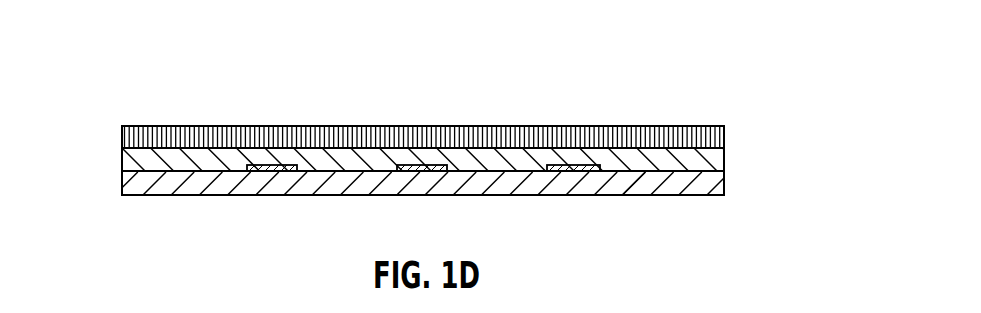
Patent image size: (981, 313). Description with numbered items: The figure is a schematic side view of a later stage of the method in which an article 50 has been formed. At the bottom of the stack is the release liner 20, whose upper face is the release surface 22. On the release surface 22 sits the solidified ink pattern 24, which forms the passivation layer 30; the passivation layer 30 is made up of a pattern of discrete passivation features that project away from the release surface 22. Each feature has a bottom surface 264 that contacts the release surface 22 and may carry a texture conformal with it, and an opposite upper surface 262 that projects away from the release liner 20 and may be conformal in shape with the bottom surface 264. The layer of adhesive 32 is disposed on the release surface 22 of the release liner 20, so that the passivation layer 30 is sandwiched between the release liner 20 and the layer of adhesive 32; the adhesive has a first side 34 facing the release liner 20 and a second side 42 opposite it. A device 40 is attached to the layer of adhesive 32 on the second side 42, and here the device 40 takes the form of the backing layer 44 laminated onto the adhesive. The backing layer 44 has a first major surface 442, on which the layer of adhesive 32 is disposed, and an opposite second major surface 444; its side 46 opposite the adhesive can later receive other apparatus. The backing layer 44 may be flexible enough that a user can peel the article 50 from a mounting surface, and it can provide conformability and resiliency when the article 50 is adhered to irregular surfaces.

The release liner 20 is at (465, 143).
The release surface 22 is at (650, 176).
The solidified ink pattern 24 is at (406, 143).
The passivation layer 30 is at (419, 140).
The layer of adhesive 32 is at (373, 157).
The first side 34 is at (362, 170).
The device 40 is at (448, 119).
The second side 42 is at (409, 140).
The backing layer 44 is at (419, 140).
The side 46 is at (583, 126).
The article 50 is at (419, 156).
The upper surface 262 is at (264, 165).
The bottom surface 264 is at (276, 170).
The first major surface 442 is at (136, 149).
The second major surface 444 is at (158, 125).